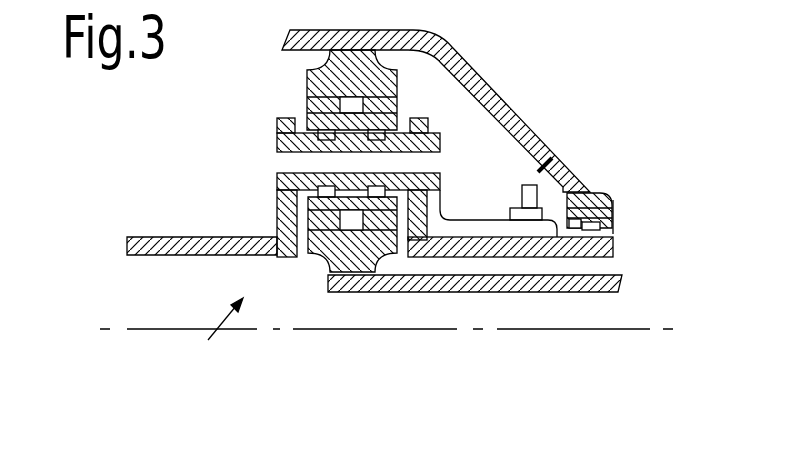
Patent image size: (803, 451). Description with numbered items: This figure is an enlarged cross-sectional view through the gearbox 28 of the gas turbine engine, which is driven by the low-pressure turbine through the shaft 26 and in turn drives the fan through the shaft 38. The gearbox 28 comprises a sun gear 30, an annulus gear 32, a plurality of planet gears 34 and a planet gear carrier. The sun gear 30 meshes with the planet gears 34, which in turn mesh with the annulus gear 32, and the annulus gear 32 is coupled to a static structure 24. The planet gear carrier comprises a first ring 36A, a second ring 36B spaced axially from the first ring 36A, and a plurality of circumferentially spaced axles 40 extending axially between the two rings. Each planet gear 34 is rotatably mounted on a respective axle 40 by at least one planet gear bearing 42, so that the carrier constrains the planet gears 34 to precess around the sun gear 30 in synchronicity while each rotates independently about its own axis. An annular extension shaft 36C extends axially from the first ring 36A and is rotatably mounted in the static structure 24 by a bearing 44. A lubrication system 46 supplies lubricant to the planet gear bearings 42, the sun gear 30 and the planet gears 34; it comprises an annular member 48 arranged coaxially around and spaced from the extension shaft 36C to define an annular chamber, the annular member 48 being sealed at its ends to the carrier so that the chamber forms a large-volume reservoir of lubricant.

The static structure 24 is at (388, 37).
The shaft 26 is at (518, 285).
The gearbox 28 is at (205, 335).
The sun gear 30 is at (325, 230).
The annulus gear 32 is at (335, 78).
The planet gear 34 is at (385, 123).
The first ring 36A is at (421, 218).
The second ring 36B is at (277, 205).
The extension shaft 36C is at (527, 240).
The shaft 38 is at (168, 248).
The axle 40 is at (307, 147).
The planet gear bearing 42 is at (368, 182).
The bearing 44 is at (615, 217).
The lubrication system 46 is at (535, 180).
The annular member 48 is at (480, 222).